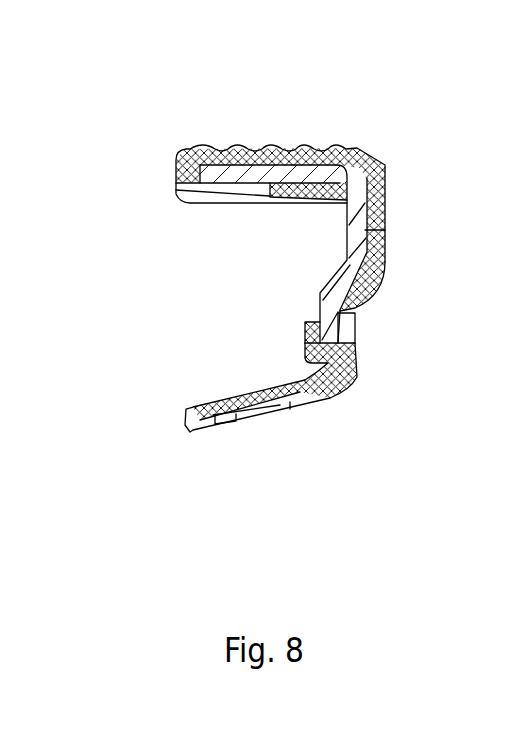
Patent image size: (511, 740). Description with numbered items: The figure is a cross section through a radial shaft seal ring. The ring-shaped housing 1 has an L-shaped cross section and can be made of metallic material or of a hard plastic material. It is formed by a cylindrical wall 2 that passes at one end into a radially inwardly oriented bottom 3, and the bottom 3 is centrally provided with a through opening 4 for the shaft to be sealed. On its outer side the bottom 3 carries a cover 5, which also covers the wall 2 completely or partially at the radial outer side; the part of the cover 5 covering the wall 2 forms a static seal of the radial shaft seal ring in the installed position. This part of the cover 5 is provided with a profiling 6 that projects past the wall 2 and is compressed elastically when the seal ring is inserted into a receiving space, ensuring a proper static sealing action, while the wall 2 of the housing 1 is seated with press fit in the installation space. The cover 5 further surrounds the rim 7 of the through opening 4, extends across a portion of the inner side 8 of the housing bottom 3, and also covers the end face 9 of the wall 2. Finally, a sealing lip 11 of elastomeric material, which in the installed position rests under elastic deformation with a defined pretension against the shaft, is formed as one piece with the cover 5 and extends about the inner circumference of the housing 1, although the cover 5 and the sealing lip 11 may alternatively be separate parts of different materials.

The housing 1 is at (292, 183).
The cylindrical wall 2 is at (223, 173).
The bottom 3 is at (360, 220).
The through opening 4 is at (318, 340).
The cover 5 is at (383, 243).
The profiling 6 is at (250, 146).
The rim 7 is at (315, 340).
The inner side 8 is at (347, 232).
The end face 9 is at (183, 183).
The sealing lip 11 is at (250, 398).